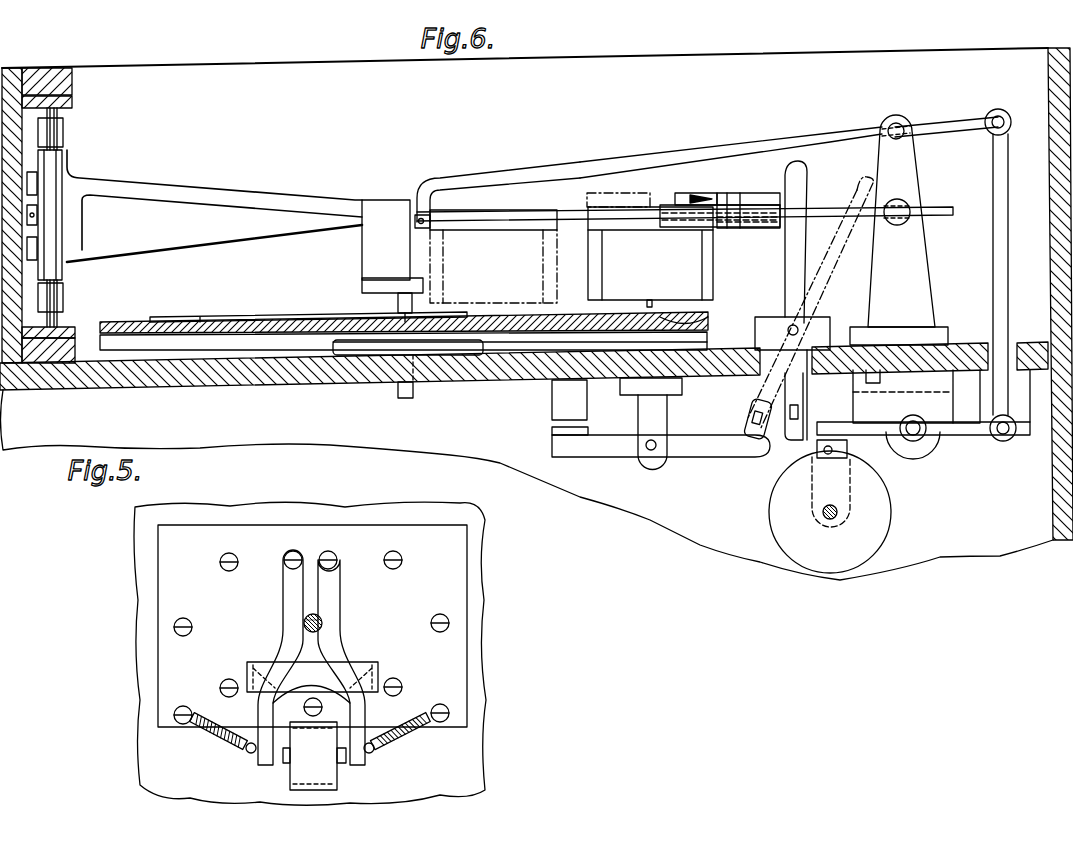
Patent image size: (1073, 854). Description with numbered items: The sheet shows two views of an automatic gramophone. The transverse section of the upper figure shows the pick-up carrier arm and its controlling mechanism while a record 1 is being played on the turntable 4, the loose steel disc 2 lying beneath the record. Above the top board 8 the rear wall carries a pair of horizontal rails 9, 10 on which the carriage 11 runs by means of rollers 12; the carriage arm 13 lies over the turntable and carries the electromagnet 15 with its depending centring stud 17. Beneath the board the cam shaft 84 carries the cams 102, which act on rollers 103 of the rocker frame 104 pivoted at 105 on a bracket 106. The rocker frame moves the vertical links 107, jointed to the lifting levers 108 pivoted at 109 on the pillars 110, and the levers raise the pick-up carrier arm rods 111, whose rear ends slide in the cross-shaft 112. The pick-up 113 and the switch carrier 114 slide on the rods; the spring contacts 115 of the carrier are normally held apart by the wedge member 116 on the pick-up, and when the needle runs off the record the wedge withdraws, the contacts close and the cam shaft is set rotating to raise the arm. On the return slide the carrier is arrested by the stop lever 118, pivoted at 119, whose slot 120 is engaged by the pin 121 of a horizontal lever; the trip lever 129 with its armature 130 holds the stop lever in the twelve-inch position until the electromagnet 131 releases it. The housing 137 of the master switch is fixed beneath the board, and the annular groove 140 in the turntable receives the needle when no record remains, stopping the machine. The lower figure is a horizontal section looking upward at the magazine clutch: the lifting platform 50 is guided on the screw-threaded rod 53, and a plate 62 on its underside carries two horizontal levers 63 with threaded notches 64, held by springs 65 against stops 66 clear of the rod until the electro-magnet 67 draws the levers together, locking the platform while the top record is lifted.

In FIG. 6, the record 1 is at (248, 320).
In FIG. 6, the loose disc 2 is at (325, 314).
In FIG. 6, the turntable 4 is at (145, 318).
In FIG. 6, the top board 8 is at (317, 367).
In FIG. 6, the horizontal rail 9 is at (62, 100).
In FIG. 6, the horizontal rail 10 is at (77, 327).
In FIG. 6, the carriage 11 is at (50, 218).
In FIG. 6, the rollers 12 is at (58, 133).
In FIG. 6, the arm 13 is at (340, 212).
In FIG. 6, the electromagnet 15 is at (370, 256).
In FIG. 6, the centring stud 17 is at (396, 296).
In FIG. 6, the cam shaft 84 is at (838, 512).
In FIG. 6, the cams 102 is at (790, 495).
In FIG. 6, the rollers 103 is at (848, 456).
In FIG. 6, the rocker frame 104 is at (965, 437).
In FIG. 6, the pivot 105 is at (940, 458).
In FIG. 6, the bracket 106 is at (962, 345).
In FIG. 6, the vertical links 107 is at (1000, 280).
In FIG. 6, the lifting levers 108 is at (815, 142).
In FIG. 6, the pivot 109 is at (900, 126).
In FIG. 6, the pillars 110 is at (912, 172).
In FIG. 6, the pick-up carrier arm rods 111 is at (466, 222).
In FIG. 6, the cross-shaft 112 is at (902, 218).
In FIG. 6, the pick-up 113 is at (483, 235).
In FIG. 6, the switch carrier 114 is at (725, 220).
In FIG. 6, the spring contacts 115 is at (755, 198).
In FIG. 6, the wedge member 116 is at (705, 197).
In FIG. 6, the stop lever 118 is at (808, 262).
In FIG. 6, the pivot 119 is at (800, 330).
In FIG. 6, the slot 120 is at (752, 400).
In FIG. 6, the pin 121 is at (803, 400).
In FIG. 6, the trip lever 129 is at (690, 450).
In FIG. 6, the armature 130 is at (552, 432).
In FIG. 6, the electromagnet 131 is at (552, 402).
In FIG. 6, the housing 137 is at (1015, 435).
In FIG. 6, the annular groove 140 is at (707, 317).
In FIG. 5, the lifting platform 50 is at (225, 775).
In FIG. 5, the screw-threaded rod 53 is at (320, 616).
In FIG. 5, the plate 62 is at (342, 530).
In FIG. 5, the horizontal levers 63 is at (290, 636).
In FIG. 5, the notches 64 is at (300, 616).
In FIG. 5, the springs 65 is at (220, 737).
In FIG. 5, the stops 66 is at (262, 662).
In FIG. 5, the electro-magnet 67 is at (330, 773).